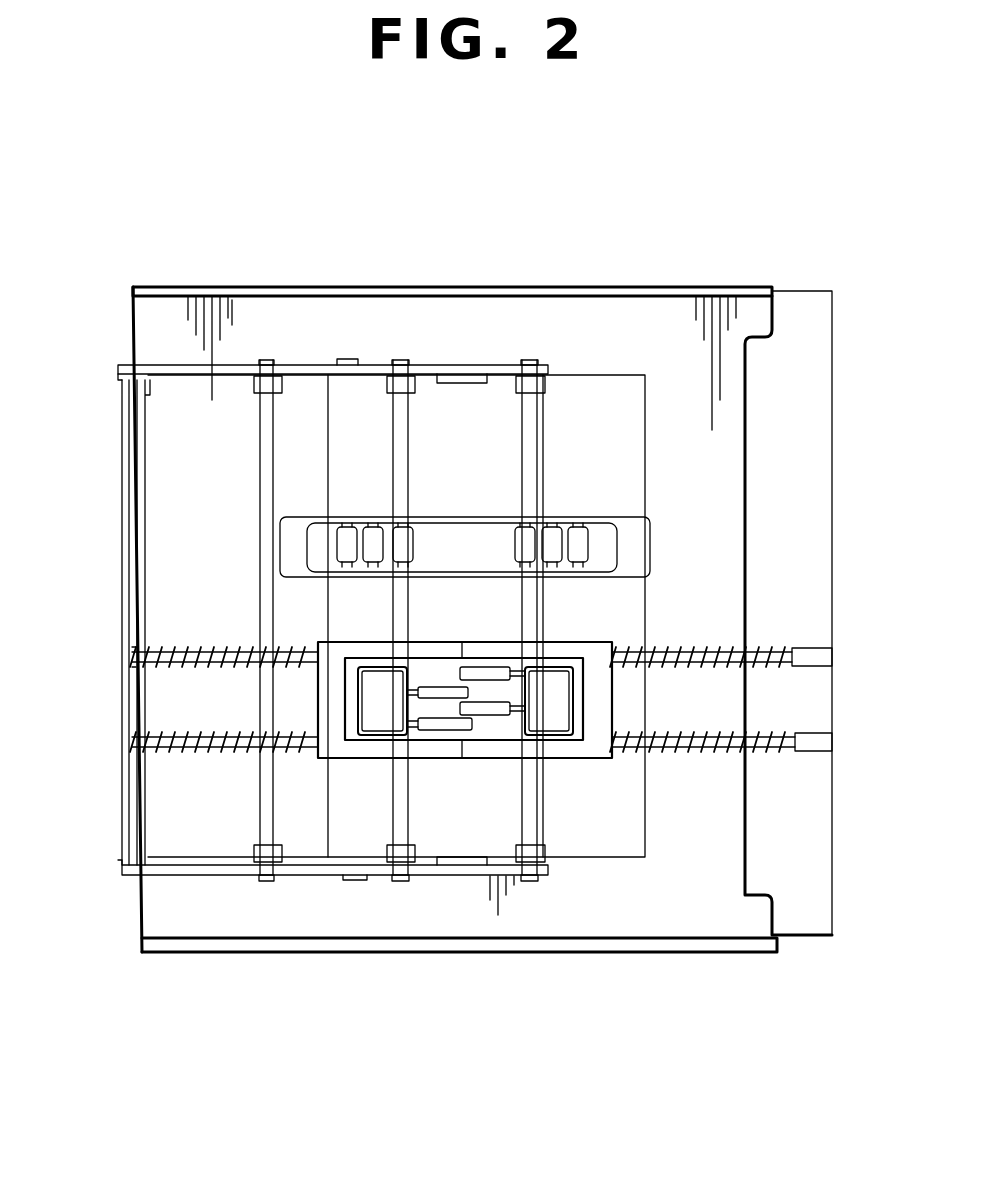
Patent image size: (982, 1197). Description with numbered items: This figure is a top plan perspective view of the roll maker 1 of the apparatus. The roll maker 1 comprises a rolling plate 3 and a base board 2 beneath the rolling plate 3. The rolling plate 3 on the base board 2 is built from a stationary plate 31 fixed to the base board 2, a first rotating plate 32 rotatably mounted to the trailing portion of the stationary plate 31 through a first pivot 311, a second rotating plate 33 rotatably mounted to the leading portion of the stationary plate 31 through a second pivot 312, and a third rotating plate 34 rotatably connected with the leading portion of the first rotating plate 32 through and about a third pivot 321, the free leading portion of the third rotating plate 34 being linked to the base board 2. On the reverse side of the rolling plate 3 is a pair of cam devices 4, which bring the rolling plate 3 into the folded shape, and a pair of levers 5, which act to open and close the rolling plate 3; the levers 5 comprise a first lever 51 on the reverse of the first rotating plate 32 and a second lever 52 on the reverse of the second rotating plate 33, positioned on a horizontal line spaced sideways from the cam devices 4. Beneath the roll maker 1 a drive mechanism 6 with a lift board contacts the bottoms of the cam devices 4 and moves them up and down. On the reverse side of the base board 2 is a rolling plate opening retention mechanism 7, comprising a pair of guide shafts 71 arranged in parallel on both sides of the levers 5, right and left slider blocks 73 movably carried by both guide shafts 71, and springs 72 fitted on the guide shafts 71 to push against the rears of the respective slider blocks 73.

The roll maker 1 is at (712, 255).
The base board 2 is at (680, 320).
The rolling plate 3 is at (440, 325).
The stationary plate 31 is at (457, 377).
The first pivot 311 is at (400, 360).
The second pivot 312 is at (530, 360).
The first rotating plate 32 is at (300, 400).
The third pivot 321 is at (263, 360).
The second rotating plate 33 is at (595, 375).
The third rotating plate 34 is at (197, 367).
The cam devices 4 is at (665, 498).
The levers 5 is at (470, 795).
The first lever 51 is at (378, 520).
The second lever 52 is at (562, 520).
The drive mechanism 6 is at (640, 593).
The rolling plate opening retention mechanism 7 is at (110, 648).
The guide shaft 71 is at (130, 745).
The springs 72 is at (215, 765).
The slider blocks 73 is at (360, 775).